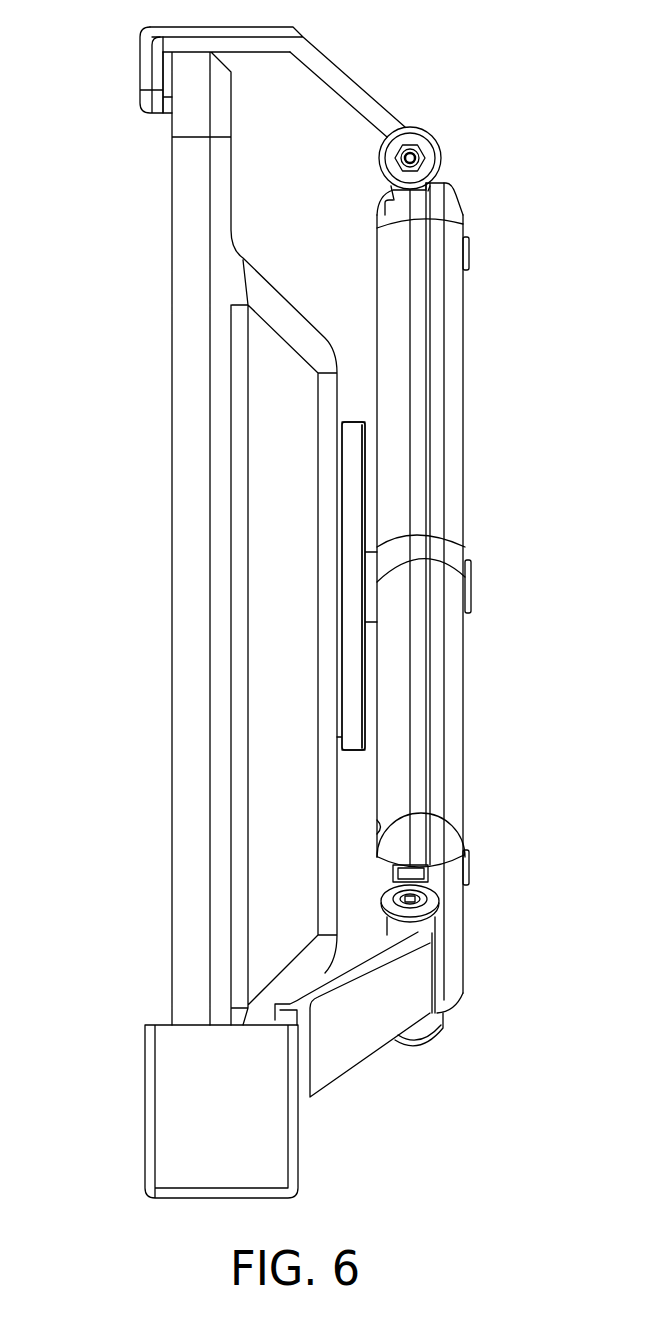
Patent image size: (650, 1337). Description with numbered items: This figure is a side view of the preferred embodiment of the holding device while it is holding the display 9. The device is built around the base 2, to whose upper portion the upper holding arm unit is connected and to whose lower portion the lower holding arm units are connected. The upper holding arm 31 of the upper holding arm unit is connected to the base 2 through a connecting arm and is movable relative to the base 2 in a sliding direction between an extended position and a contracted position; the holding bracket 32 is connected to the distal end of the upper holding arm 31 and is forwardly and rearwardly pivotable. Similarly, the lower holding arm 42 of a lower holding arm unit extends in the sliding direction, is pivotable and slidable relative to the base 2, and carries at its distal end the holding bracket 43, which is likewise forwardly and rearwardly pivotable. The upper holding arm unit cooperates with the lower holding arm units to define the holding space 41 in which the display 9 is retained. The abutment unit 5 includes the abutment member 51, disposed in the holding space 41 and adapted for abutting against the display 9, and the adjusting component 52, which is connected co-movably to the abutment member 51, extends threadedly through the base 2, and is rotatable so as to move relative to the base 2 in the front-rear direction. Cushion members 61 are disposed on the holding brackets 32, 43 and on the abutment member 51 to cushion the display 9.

The base 2 is at (496, 835).
The abutment unit 5 is at (374, 482).
The display 9 is at (170, 413).
The upper holding arm 31 is at (443, 157).
The holding bracket 32 is at (147, 68).
The holding space 41 is at (305, 113).
The lower holding arm 42 is at (440, 900).
The holding bracket 43 is at (150, 1078).
The abutment member 51 is at (352, 423).
The adjusting component 52 is at (471, 583).
The cushion members 61 is at (176, 86).